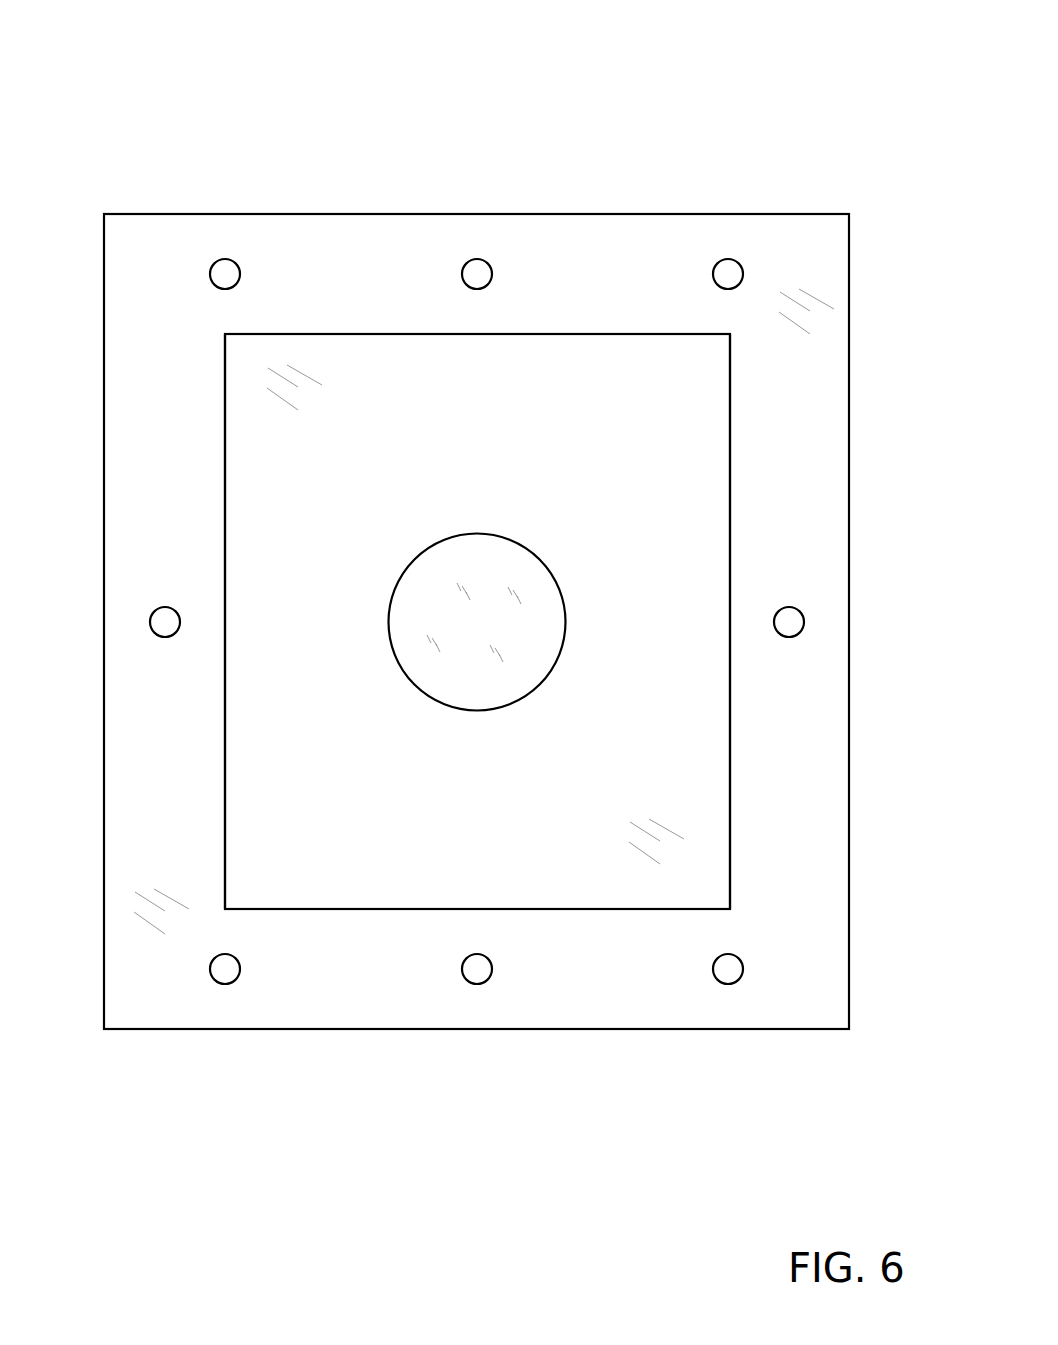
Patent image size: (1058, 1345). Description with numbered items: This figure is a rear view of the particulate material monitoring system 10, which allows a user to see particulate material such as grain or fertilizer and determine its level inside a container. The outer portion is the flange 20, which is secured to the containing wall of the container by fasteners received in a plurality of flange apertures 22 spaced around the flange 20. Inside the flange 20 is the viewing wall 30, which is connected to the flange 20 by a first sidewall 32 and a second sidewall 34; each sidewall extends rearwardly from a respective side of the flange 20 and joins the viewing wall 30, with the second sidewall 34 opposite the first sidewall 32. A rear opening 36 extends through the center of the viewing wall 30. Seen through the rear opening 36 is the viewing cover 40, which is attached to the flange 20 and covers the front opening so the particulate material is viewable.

The particulate material monitoring system 10 is at (662, 88).
The flange 20 is at (402, 277).
The flange apertures 22 is at (212, 266).
The viewing wall 30 is at (315, 843).
The first sidewall 32 is at (225, 477).
The second sidewall 34 is at (730, 473).
The rear opening 36 is at (413, 683).
The viewing cover 40 is at (510, 627).